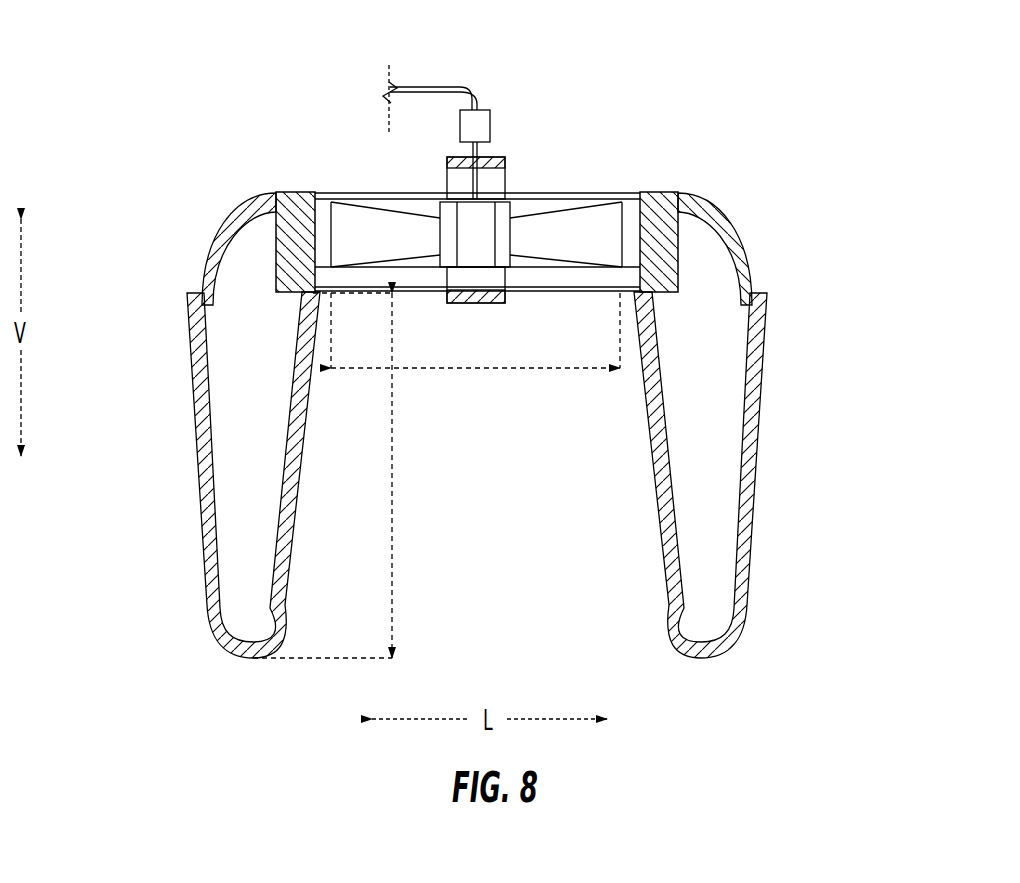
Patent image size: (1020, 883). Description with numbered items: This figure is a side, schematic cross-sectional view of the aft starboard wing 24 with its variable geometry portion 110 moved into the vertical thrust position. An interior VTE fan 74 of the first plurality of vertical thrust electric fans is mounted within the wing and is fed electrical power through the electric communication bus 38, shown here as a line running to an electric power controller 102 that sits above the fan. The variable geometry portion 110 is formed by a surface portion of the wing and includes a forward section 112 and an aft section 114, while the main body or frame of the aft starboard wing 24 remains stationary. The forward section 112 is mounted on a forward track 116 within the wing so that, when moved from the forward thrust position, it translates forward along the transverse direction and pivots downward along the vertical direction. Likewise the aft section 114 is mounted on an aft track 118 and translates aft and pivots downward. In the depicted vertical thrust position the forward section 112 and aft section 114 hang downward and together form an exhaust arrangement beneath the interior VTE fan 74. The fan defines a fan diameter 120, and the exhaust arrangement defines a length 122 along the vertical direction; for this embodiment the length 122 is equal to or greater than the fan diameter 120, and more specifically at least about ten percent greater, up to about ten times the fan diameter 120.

The aft starboard wing 24 is at (478, 333).
The electric communication bus 38 is at (461, 66).
The interior VTE fan 74 is at (566, 180).
The electric power controller 102 is at (493, 121).
The variable geometry portion 110 is at (478, 475).
The forward section 112 is at (193, 410).
The aft section 114 is at (760, 402).
The forward track 116 is at (212, 238).
The aft track 118 is at (703, 200).
The fan diameter 120 is at (477, 370).
The length 122 is at (393, 545).